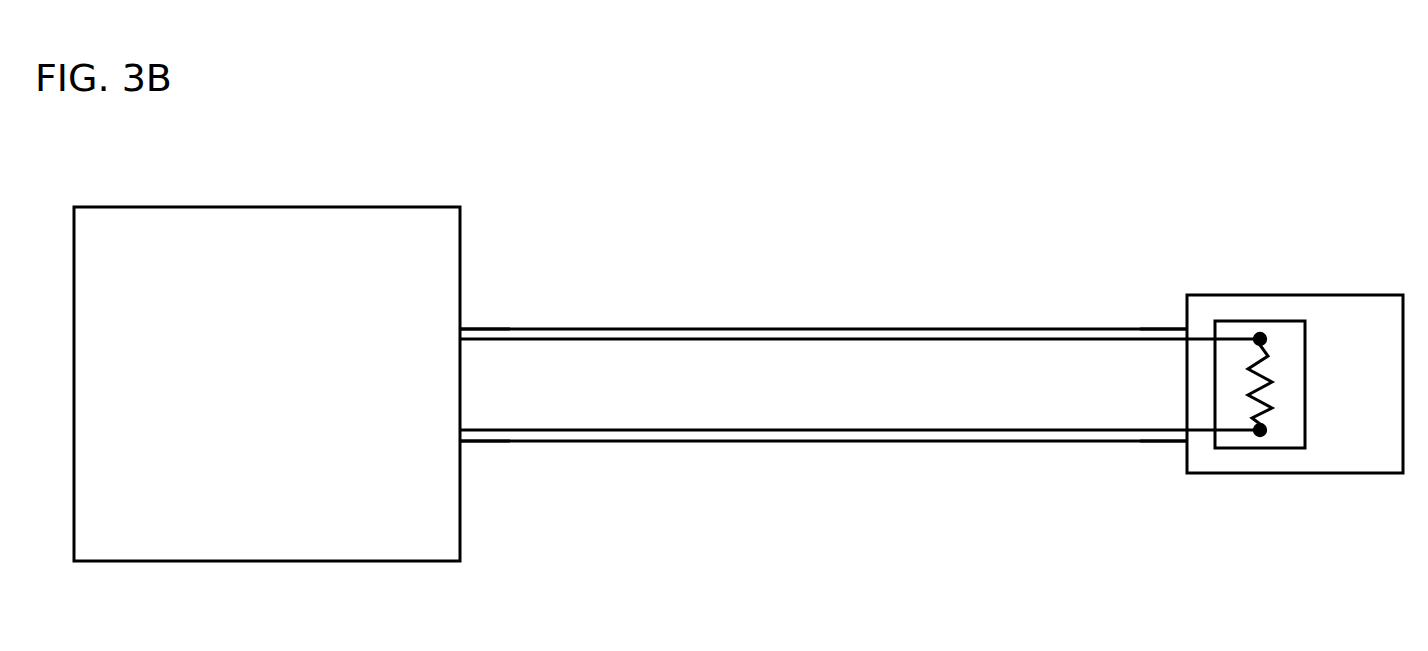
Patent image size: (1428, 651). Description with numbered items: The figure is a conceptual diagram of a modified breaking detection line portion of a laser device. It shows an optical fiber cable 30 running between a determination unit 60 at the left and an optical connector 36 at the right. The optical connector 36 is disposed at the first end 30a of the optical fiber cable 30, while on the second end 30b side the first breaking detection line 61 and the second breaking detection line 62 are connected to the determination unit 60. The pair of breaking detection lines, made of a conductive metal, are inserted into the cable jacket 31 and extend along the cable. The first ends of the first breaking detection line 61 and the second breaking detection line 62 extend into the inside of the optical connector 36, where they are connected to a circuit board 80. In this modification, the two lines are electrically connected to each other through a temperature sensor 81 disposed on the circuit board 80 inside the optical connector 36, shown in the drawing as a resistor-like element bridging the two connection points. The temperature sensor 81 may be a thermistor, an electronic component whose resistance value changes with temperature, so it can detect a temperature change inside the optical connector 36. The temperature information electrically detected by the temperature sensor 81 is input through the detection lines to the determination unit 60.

The determination unit 60 is at (460, 246).
The optical fiber cable 30 is at (860, 373).
The first end 30a is at (1168, 442).
The second end 30b is at (495, 442).
The cable jacket 31 is at (640, 442).
The first breaking detection line 61 is at (949, 339).
The second breaking detection line 62 is at (948, 431).
The optical connector 36 is at (1295, 476).
The circuit board 80 is at (1232, 329).
The temperature sensor 81 is at (1268, 361).